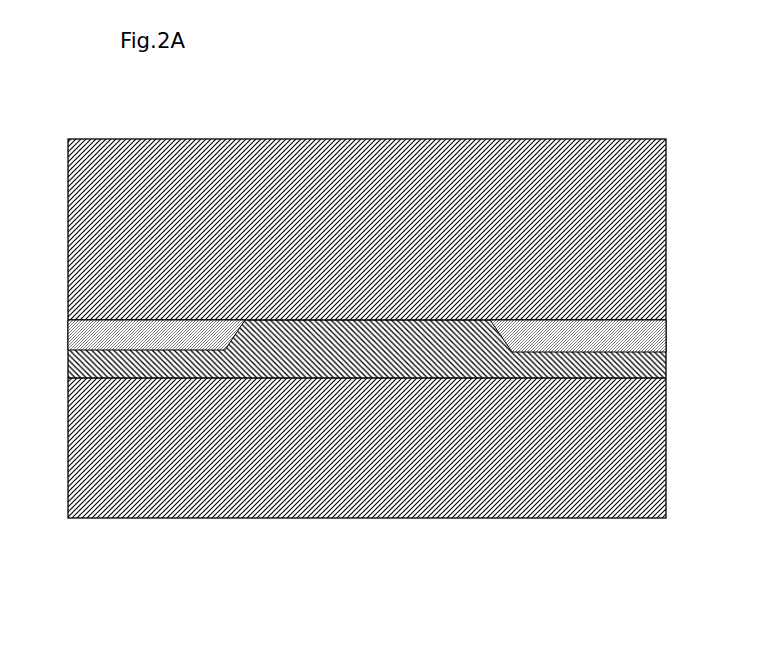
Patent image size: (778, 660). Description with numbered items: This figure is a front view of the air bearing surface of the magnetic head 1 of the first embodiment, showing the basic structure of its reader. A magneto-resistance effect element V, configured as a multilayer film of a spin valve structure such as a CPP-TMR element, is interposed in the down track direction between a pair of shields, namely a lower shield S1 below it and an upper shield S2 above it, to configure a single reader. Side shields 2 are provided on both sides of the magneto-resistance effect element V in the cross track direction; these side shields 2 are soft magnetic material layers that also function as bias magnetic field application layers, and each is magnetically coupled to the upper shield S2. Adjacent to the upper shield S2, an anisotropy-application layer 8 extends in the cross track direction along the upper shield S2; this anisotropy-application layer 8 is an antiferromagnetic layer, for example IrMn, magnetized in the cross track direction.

The magnetic head 1 is at (489, 132).
The anisotropy-application layer 8 is at (667, 155).
The upper shield S2 is at (667, 252).
The side shields 2 is at (667, 332).
The magneto-resistance effect element V is at (362, 518).
The lower shield S1 is at (667, 450).